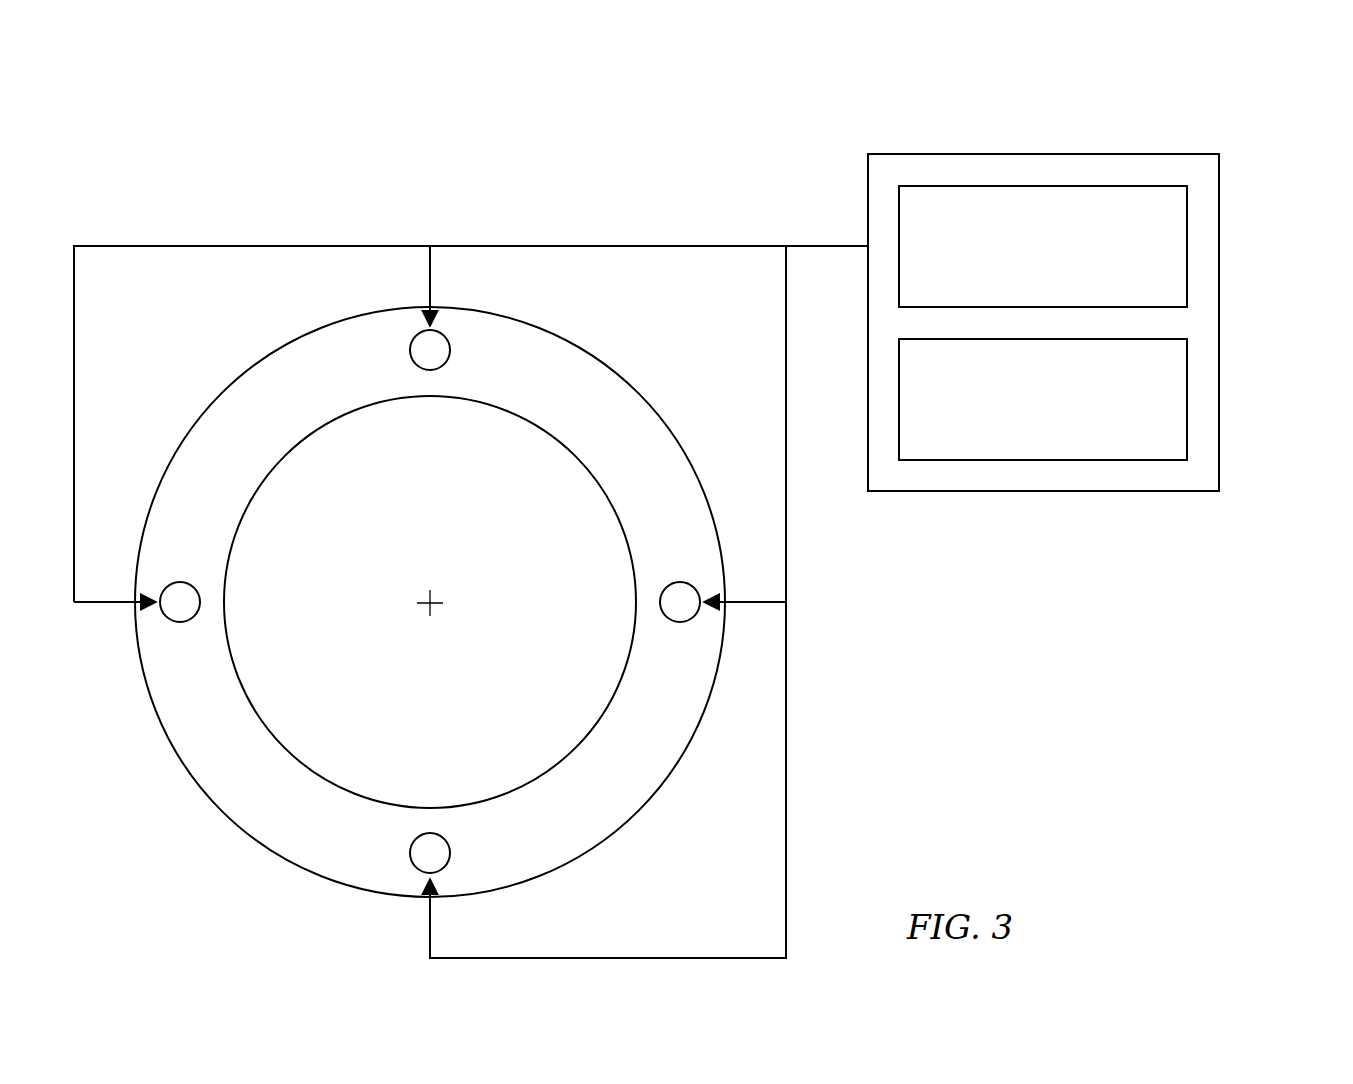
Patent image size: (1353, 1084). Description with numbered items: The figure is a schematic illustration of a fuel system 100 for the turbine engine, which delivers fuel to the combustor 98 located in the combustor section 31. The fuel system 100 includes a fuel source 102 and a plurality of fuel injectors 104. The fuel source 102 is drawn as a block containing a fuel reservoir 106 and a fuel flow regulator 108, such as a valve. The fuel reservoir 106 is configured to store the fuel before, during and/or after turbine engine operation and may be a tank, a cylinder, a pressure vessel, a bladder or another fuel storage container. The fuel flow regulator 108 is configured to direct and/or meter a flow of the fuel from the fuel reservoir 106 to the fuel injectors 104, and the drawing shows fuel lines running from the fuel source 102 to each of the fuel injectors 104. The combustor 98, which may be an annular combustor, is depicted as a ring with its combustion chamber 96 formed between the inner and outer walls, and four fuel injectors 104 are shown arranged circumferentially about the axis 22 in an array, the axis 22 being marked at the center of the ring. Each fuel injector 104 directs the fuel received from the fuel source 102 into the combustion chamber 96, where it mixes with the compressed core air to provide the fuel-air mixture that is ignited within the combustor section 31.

The fuel system 100 is at (1160, 114).
The fuel source 102 is at (1230, 228).
The fuel flow regulator 108 is at (1063, 277).
The fuel reservoir 106 is at (1063, 430).
The combustor section 31 is at (573, 300).
The combustor 98 is at (623, 376).
The combustion chamber 96 is at (609, 423).
The fuel injectors 104 is at (430, 370).
The axis 22 is at (433, 610).